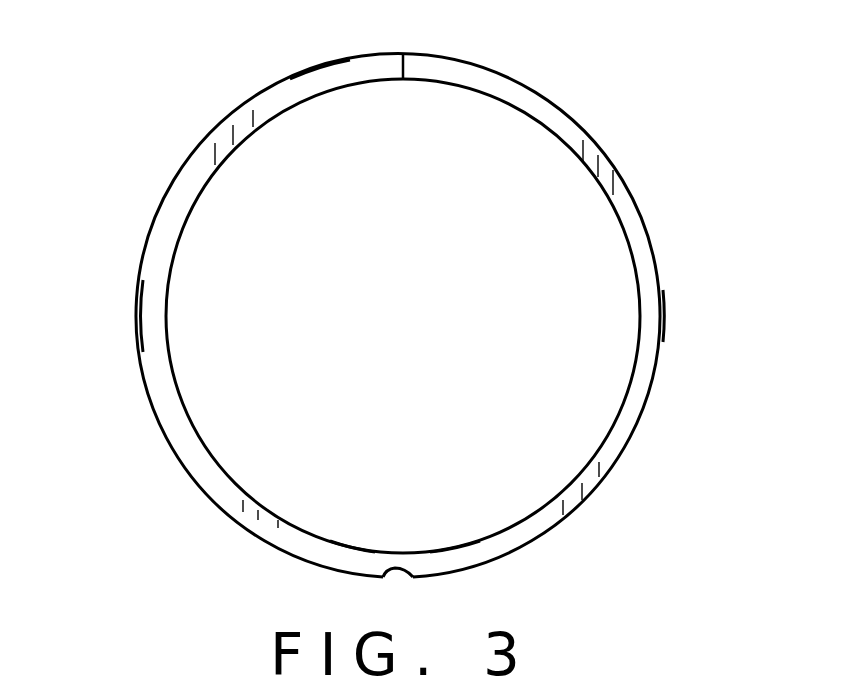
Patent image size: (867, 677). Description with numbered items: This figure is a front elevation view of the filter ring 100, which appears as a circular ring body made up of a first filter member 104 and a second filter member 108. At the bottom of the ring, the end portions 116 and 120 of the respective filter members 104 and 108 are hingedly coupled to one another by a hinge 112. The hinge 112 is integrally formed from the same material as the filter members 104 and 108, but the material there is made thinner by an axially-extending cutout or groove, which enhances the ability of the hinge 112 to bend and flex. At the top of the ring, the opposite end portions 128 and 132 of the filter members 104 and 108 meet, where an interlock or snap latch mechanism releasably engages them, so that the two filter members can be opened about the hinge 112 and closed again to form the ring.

The filter ring 100 is at (652, 101).
The first filter member 104 is at (665, 331).
The second filter member 108 is at (140, 321).
The hinge 112 is at (405, 569).
The end portion 116 is at (470, 543).
The end portion 120 is at (350, 543).
The end portion 128 is at (453, 58).
The end portion 132 is at (317, 67).